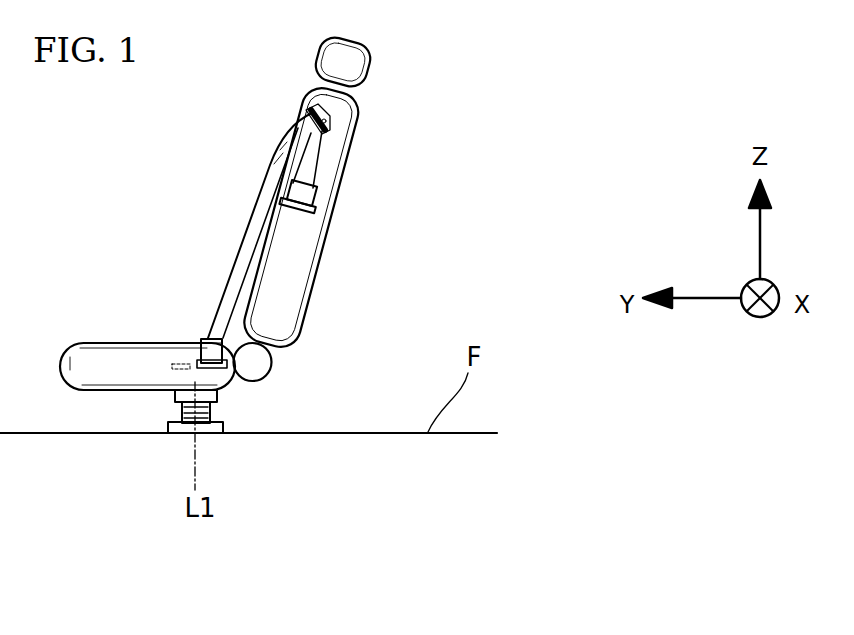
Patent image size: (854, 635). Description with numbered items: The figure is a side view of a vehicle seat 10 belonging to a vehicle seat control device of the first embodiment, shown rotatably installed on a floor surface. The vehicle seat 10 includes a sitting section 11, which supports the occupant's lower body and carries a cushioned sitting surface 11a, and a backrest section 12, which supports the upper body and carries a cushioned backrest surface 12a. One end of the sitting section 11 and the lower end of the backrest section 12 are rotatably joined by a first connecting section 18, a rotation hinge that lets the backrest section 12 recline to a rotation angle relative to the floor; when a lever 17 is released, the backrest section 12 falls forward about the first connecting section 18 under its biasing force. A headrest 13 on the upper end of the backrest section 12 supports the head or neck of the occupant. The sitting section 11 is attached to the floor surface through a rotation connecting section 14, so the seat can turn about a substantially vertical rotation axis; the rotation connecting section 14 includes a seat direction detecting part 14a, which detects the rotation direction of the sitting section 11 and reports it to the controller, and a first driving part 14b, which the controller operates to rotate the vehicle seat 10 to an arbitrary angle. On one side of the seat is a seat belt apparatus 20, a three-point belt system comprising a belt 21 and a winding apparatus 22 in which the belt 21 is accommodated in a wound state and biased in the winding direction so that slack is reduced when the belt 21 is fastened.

The vehicle seat 10 is at (128, 593).
The sitting section 11 is at (93, 363).
The sitting surface 11a is at (122, 342).
The backrest section 12 is at (293, 290).
The backrest surface 12a is at (297, 120).
The headrest 13 is at (353, 63).
The rotation connecting section 14 is at (238, 440).
The seat direction detecting part 14a is at (186, 430).
The first driving part 14b is at (209, 406).
The lever 17 is at (172, 372).
The first connecting section 18 is at (263, 372).
The seat belt apparatus 20 is at (330, 175).
The belt 21 is at (243, 270).
The winding apparatus 22 is at (306, 201).